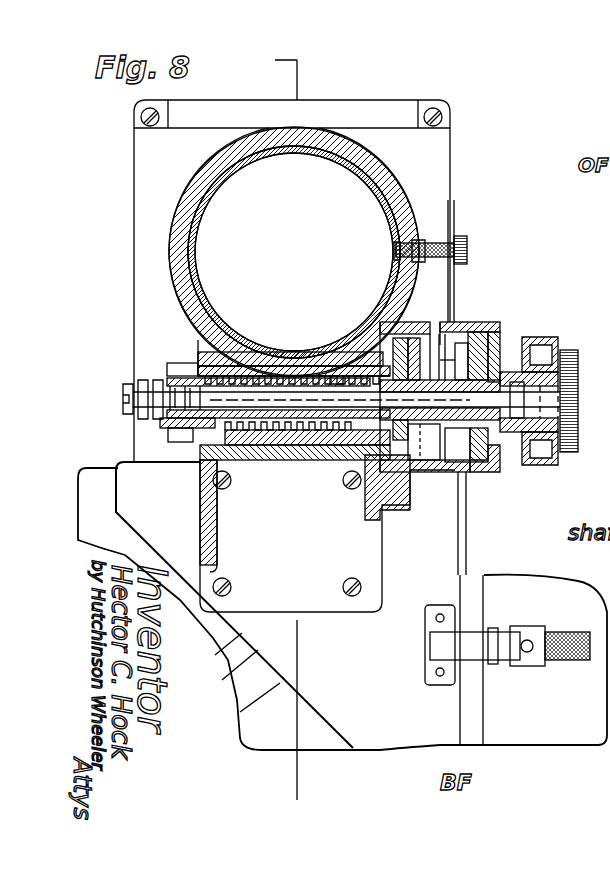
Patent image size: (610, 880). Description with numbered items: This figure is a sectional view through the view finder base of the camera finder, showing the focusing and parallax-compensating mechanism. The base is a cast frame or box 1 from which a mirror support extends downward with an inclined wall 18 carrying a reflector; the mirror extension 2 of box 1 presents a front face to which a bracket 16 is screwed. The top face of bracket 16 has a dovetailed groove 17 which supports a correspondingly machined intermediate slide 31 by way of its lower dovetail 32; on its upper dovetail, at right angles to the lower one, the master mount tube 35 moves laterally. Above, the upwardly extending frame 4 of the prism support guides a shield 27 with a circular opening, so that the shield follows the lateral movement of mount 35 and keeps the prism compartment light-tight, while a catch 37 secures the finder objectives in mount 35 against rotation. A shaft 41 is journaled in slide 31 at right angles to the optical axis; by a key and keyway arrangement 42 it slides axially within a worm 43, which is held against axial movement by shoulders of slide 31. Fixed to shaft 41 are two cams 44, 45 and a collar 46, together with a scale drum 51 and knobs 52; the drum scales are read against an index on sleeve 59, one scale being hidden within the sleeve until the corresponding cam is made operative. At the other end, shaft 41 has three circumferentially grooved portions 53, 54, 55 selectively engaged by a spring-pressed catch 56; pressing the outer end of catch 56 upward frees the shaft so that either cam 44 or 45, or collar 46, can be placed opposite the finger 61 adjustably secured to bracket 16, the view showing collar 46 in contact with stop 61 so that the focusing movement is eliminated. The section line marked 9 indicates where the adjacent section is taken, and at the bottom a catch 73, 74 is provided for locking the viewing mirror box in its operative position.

The cast frame or box 1 is at (450, 548).
The mirror extension 2 is at (392, 748).
The frame 4 is at (222, 108).
The section line 9 is at (287, 71).
The bracket 16 is at (342, 605).
The dovetailed groove 17 is at (302, 452).
The inclined wall 18 is at (262, 706).
The shield 27 is at (432, 158).
The intermediate slide 31 is at (338, 440).
The lower dovetail 32 is at (255, 440).
The master mount tube 35 is at (178, 256).
The catch 37 is at (460, 243).
The shaft 41 is at (457, 445).
The key and keyway arrangement 42 is at (300, 375).
The worm 43 is at (325, 375).
The cam 44 is at (421, 360).
The cam 45 is at (420, 345).
The collar 46 is at (454, 361).
The scale drum 51 is at (472, 328).
The knobs 52 is at (538, 338).
The circumferentially grooved portion 53 is at (124, 388).
The circumferentially grooved portion 54 is at (141, 382).
The circumferentially grooved portion 55 is at (162, 378).
The catch 56 is at (178, 452).
The sleeve 59 is at (456, 322).
The finger 61 is at (440, 488).
The catch 73 is at (432, 678).
The catch 74 is at (565, 662).